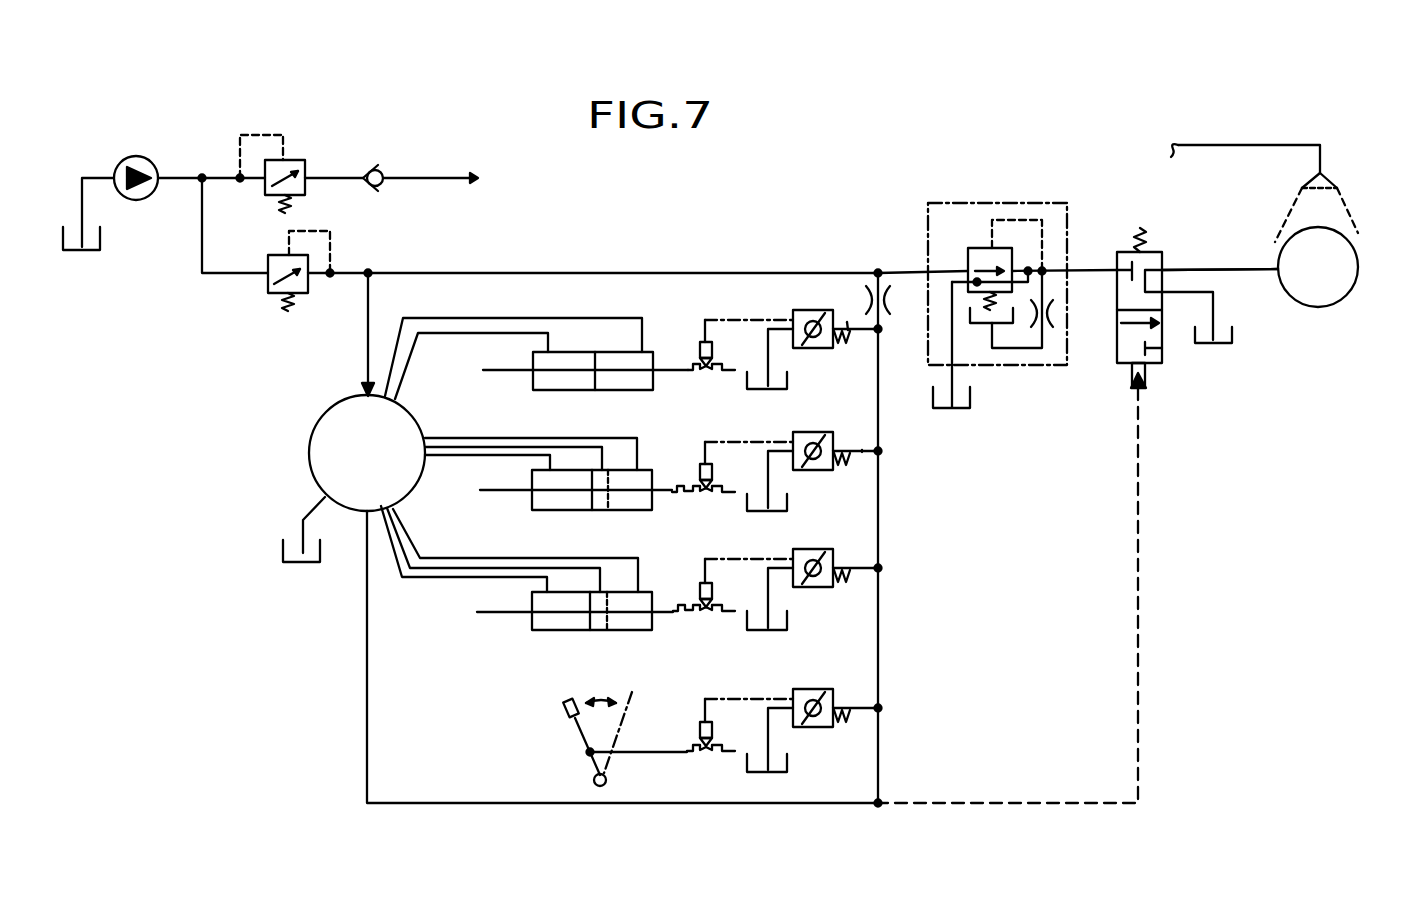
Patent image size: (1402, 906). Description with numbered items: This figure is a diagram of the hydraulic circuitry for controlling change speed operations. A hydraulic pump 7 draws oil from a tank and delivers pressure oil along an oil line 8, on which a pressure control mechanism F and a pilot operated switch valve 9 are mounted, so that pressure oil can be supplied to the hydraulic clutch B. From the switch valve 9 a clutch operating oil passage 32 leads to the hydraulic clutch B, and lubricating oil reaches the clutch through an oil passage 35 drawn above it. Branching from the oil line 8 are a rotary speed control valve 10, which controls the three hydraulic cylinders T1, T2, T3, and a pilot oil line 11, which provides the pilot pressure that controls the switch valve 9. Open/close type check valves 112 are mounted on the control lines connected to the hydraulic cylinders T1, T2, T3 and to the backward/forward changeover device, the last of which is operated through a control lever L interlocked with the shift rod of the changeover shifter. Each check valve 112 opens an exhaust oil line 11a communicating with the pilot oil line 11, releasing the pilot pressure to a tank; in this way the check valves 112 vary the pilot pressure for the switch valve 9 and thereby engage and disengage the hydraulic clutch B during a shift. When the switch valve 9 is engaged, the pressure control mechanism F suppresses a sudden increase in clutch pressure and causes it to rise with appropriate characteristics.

The hydraulic pump 7 is at (148, 158).
The oil line 8 is at (503, 272).
The pilot operated switch valve 9 is at (1162, 355).
The rotary speed control valve 10 is at (580, 538).
The pilot oil line 11 is at (878, 527).
The exhaust oil line 11a is at (847, 322).
The open/close type check valve 112 is at (823, 350).
The clutch operating oil passage 32 is at (1222, 268).
The oil passage 35 is at (1322, 158).
The hydraulic clutch B is at (1318, 267).
The pressure control mechanism F is at (932, 203).
The control lever L is at (562, 712).
The hydraulic cylinder T1 is at (572, 511).
The hydraulic cylinder T2 is at (566, 631).
The hydraulic cylinder T3 is at (572, 391).